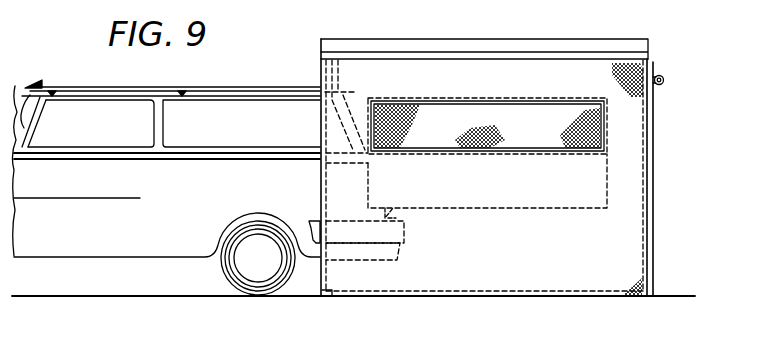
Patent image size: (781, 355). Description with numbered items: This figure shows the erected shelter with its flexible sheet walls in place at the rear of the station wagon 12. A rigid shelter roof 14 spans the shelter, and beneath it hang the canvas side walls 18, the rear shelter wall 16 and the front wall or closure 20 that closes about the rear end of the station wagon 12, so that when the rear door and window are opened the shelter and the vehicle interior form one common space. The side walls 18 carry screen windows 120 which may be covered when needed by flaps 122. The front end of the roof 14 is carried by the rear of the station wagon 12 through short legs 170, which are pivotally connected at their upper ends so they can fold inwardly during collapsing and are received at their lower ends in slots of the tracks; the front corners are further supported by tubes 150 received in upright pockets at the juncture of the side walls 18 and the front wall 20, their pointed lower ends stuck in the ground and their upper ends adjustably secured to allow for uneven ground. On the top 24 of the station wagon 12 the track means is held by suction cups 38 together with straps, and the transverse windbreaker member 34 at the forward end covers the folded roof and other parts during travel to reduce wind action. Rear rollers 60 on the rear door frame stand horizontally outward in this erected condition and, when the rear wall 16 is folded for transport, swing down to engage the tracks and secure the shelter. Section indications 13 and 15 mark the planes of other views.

The station wagon 12 is at (148, 232).
The step 13 is at (299, 276).
The rigid shelter roof 14 is at (410, 46).
The section line 15 is at (483, 293).
The rear shelter wall 16 is at (653, 150).
The side walls 18 is at (505, 53).
The front wall or closure 20 is at (321, 70).
The top of station wagon 24 is at (221, 97).
The transverse windbreaker member 34 is at (30, 87).
The suction cups 38 is at (54, 97).
The rear rollers 60 is at (665, 80).
The screen windows 120 is at (455, 134).
The flaps 122 is at (494, 194).
The tubes or pipes 150 is at (327, 299).
The short legs 170 is at (316, 50).